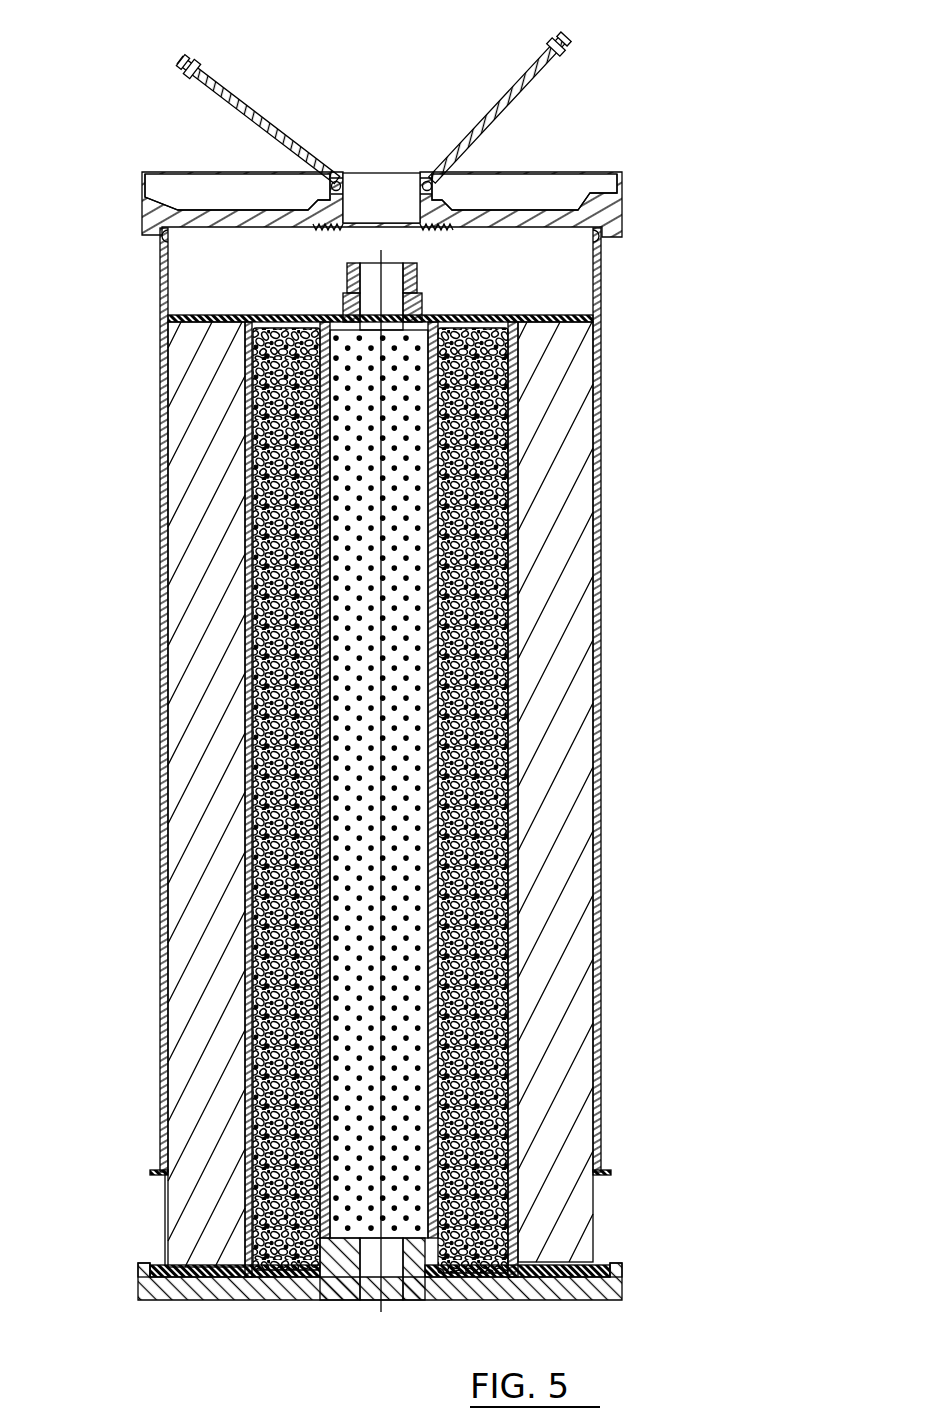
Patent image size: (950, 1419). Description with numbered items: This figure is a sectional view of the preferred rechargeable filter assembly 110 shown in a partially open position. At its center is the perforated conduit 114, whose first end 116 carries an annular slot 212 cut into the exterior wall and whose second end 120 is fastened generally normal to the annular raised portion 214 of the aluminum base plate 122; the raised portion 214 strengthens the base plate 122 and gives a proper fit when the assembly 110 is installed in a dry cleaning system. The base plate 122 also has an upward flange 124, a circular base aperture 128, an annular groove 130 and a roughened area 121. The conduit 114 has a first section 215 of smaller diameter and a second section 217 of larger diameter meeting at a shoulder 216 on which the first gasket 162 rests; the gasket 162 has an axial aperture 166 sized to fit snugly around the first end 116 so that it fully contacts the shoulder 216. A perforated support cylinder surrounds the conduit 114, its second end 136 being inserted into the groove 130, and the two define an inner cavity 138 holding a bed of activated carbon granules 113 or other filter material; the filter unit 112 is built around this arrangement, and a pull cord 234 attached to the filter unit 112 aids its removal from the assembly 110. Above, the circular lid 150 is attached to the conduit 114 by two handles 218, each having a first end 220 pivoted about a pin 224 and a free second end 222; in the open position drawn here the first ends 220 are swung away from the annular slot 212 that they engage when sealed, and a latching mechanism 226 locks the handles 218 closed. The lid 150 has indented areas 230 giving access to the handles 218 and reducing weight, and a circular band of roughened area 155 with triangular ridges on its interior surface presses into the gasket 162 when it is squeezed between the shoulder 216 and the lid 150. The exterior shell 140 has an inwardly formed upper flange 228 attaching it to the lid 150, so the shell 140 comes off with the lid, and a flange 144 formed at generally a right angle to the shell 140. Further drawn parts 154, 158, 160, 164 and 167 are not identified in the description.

The rechargeable filter assembly 110 is at (605, 400).
The filter unit 112 is at (562, 451).
The activated carbon granules 113 is at (515, 500).
The perforated conduit 114 is at (430, 575).
The first end 116 is at (420, 270).
The second end 120 is at (428, 1300).
The roughened area 121 is at (160, 1300).
The base plate 122 is at (625, 1291).
The upward flange 124 is at (140, 1268).
The circular base aperture 128 is at (370, 1300).
The annular groove 130 is at (255, 1300).
The second end 136 is at (232, 1300).
The inner cavity 138 is at (498, 611).
The exterior shell 140 is at (596, 655).
The flange 144 is at (155, 1170).
The circular lid 150 is at (140, 205).
The terminal block 154 is at (362, 175).
The roughened area 155 is at (420, 228).
The cathode body 158 is at (556, 735).
The cathode body 160 is at (566, 778).
The first gasket 162 is at (252, 314).
The seal 164 is at (192, 1265).
The axial aperture 166 is at (330, 315).
The insulating layer 167 is at (172, 1268).
The annular slot 212 is at (420, 285).
The annular raised portion 214 is at (335, 1300).
The first section 215 is at (418, 312).
The shoulder 216 is at (345, 322).
The second section 217 is at (515, 360).
The handles 218 is at (245, 106).
The first end 220 is at (335, 188).
The second end 222 is at (182, 58).
The pin 224 is at (430, 178).
The latching mechanism 226 is at (178, 80).
The upper flange 228 is at (160, 252).
The areas 230 is at (175, 185).
The pull cord 234 is at (262, 283).